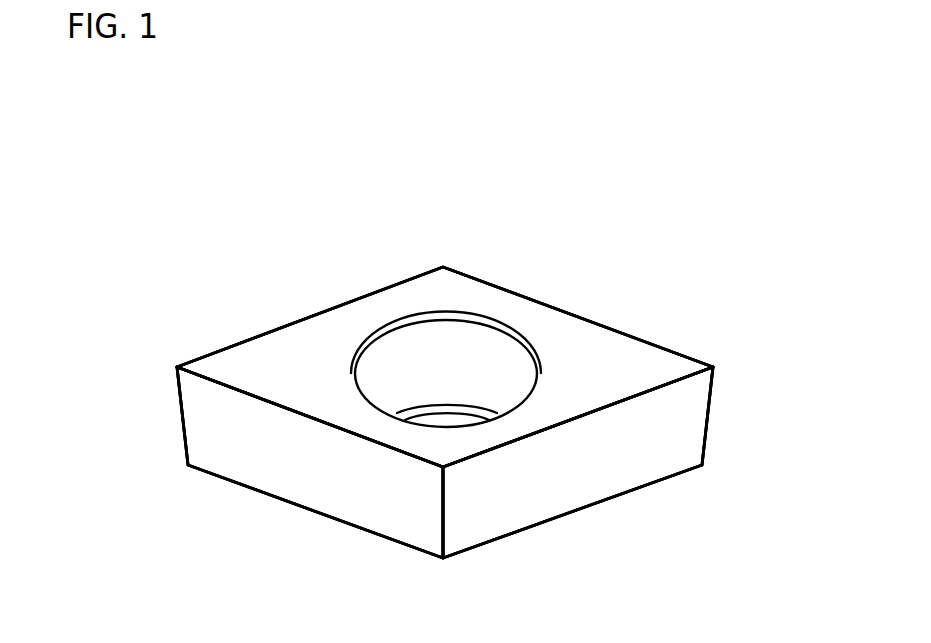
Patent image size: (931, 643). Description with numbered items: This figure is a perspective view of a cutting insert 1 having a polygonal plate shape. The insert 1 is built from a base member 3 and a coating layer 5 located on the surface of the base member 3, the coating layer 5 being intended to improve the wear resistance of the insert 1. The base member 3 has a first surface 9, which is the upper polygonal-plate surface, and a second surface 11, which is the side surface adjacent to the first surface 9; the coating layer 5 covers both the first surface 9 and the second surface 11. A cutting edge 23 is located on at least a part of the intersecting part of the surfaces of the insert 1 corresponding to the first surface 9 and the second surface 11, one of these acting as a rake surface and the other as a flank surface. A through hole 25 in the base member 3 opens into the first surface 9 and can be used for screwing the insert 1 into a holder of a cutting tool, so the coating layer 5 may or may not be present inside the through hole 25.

The insert 1 is at (302, 193).
The base member 3 is at (493, 368).
The coating layer 5 is at (632, 372).
The first surface 9 is at (575, 343).
The second surface 11 is at (288, 465).
The cutting edge 23 is at (247, 398).
The through hole 25 is at (422, 345).